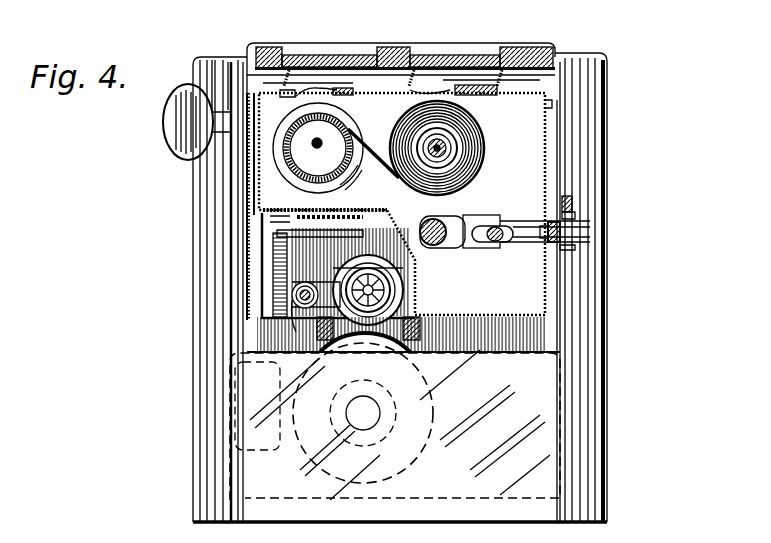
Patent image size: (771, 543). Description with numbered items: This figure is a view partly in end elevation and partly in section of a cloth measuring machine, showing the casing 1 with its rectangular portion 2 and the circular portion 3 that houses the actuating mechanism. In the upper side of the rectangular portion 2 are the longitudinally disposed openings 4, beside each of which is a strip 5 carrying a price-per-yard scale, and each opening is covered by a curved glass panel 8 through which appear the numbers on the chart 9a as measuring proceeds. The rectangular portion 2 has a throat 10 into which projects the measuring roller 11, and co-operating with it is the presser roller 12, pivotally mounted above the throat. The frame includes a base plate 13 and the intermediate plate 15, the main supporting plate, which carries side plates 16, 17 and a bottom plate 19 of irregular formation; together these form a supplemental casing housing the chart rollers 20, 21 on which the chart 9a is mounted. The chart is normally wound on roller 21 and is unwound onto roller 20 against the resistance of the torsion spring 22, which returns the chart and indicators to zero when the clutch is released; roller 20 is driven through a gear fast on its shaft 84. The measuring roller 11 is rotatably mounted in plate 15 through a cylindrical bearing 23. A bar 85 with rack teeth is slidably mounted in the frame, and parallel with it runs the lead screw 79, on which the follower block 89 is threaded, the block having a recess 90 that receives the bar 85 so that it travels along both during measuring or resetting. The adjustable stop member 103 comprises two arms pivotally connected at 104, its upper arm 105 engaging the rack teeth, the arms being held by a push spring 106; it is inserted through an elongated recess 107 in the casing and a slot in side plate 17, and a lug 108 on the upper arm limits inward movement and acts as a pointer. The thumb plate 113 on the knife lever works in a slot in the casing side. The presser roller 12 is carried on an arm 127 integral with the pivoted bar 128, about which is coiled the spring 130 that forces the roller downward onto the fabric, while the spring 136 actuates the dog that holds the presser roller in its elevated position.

The casing 1 is at (203, 428).
The rectangular portion 2 is at (563, 377).
The circular portion 3 is at (212, 70).
The openings 4 is at (343, 50).
The strip 5 is at (362, 77).
The curved glass panel 8 is at (315, 90).
The chart 9a is at (373, 140).
The throat 10 is at (530, 333).
The measuring roller 11 is at (430, 382).
The presser roller 12 is at (400, 287).
The base plate 13 is at (450, 500).
The intermediate plate 15 is at (497, 340).
The side plate 16 is at (250, 175).
The side plate 17 is at (542, 167).
The bottom plate 19 is at (393, 220).
The chart roller 20 is at (273, 152).
The chart roller 21 is at (472, 120).
The torsion spring 22 is at (455, 148).
The cylindrical bearing 23 is at (363, 430).
The lead screw 79 is at (433, 247).
The shaft 84 is at (322, 145).
The bar 85 is at (493, 242).
The follower block 89 is at (450, 217).
The recess 90 is at (483, 237).
The adjustable stop member 103 is at (570, 207).
The pivot 104 is at (563, 248).
The upper arm 105 is at (577, 222).
The push spring 106 is at (578, 235).
The elongated recess 107 is at (537, 218).
The lug 108 is at (573, 215).
The thumb plate 113 is at (175, 127).
The arm 127 is at (323, 283).
The bar 128 is at (293, 332).
The coil spring 130 is at (290, 293).
The spring 136 is at (338, 265).